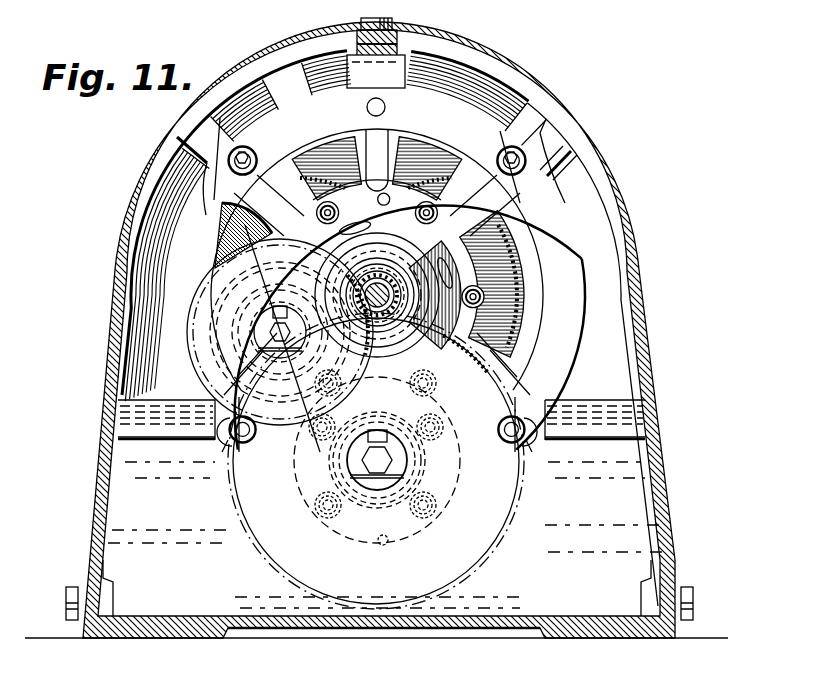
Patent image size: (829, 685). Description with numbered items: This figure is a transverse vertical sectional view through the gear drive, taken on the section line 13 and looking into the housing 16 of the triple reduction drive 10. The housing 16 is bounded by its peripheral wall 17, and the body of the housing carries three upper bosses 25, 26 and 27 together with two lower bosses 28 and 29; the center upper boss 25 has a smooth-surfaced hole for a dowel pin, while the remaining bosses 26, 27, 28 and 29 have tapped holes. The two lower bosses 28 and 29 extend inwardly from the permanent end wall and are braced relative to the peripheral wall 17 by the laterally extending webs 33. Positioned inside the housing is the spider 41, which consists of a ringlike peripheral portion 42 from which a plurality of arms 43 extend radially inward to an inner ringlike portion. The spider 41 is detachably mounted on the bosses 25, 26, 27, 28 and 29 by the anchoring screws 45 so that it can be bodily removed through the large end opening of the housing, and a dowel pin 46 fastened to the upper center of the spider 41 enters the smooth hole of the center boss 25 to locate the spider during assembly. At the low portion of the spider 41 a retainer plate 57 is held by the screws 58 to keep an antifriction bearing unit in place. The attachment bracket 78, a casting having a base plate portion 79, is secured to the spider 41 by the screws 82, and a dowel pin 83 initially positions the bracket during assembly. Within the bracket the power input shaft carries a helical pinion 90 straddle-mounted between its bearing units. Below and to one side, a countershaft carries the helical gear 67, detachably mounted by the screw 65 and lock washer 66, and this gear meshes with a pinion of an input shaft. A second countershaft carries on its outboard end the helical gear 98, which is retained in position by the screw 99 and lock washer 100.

The pole piece 10 is at (418, 165).
The section line 13 is at (250, 240).
The housing 16 is at (146, 170).
The peripheral wall 17 is at (263, 57).
The center upper boss 25 is at (407, 79).
The upper boss 26 is at (247, 114).
The upper boss 27 is at (566, 168).
The lower boss 28 is at (220, 452).
The lower boss 29 is at (530, 470).
The webs 33 is at (150, 430).
The spider 41 is at (584, 318).
The ringlike peripheral portion 42 is at (578, 371).
The arms 43 is at (377, 259).
The anchoring screws 45 is at (233, 172).
The dowel pin 46 is at (367, 107).
The retainer plate 57 is at (385, 547).
The screws 58 is at (326, 516).
The screw 65 is at (393, 461).
The lock washer 66 is at (390, 440).
The helical gear 67 is at (494, 548).
The attachment bracket 78 is at (390, 236).
The base plate portion 79 is at (337, 195).
The screws 82 is at (321, 220).
The dowel pin 83 is at (390, 200).
The helical pinion 90 is at (381, 278).
The helical gear 98 is at (225, 290).
The screw 99 is at (290, 334).
The lock washer 100 is at (296, 320).